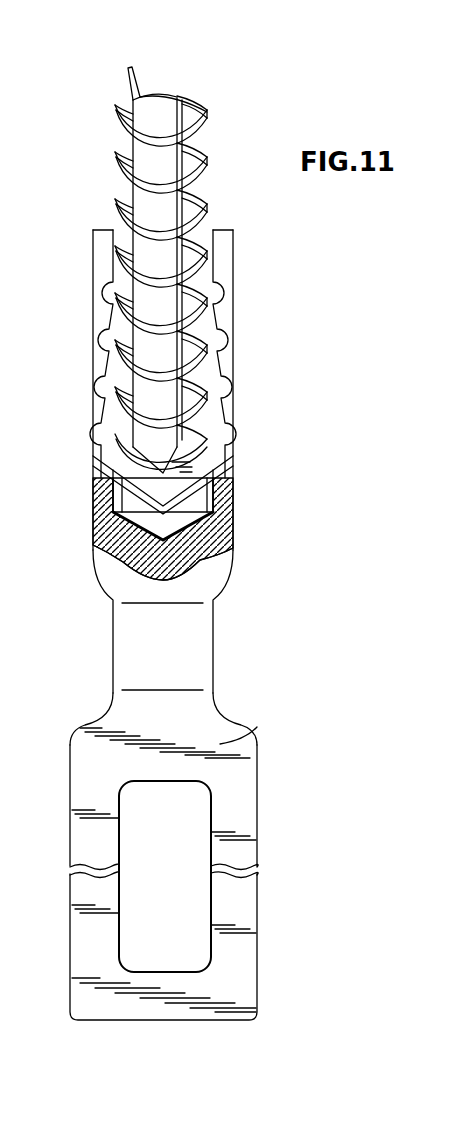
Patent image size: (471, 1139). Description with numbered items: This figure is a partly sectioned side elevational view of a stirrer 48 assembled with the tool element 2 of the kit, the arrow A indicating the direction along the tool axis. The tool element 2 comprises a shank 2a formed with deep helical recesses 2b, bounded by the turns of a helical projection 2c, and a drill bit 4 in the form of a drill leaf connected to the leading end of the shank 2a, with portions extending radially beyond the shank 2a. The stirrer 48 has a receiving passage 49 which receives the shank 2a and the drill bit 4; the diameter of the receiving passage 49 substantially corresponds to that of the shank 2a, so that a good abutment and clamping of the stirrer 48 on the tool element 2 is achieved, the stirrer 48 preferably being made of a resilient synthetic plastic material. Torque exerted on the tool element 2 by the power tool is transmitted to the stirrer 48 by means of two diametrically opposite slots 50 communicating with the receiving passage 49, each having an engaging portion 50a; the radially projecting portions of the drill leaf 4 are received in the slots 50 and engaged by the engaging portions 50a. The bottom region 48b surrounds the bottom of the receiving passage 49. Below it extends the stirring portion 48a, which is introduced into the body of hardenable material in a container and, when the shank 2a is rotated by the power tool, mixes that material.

The direction of insertion A is at (160, 15).
The tool 2 is at (213, 123).
The shank 2a is at (117, 370).
The helical recesses 2b is at (205, 380).
The helical projection 2c is at (185, 317).
The drill bit 4 is at (233, 451).
The stirrer 48 is at (70, 733).
The stirring portion 48a is at (247, 732).
The bottom region 48b is at (95, 483).
The receiving passage 49 is at (195, 497).
The slots 50 is at (105, 290).
The engaging portion 50a is at (227, 262).